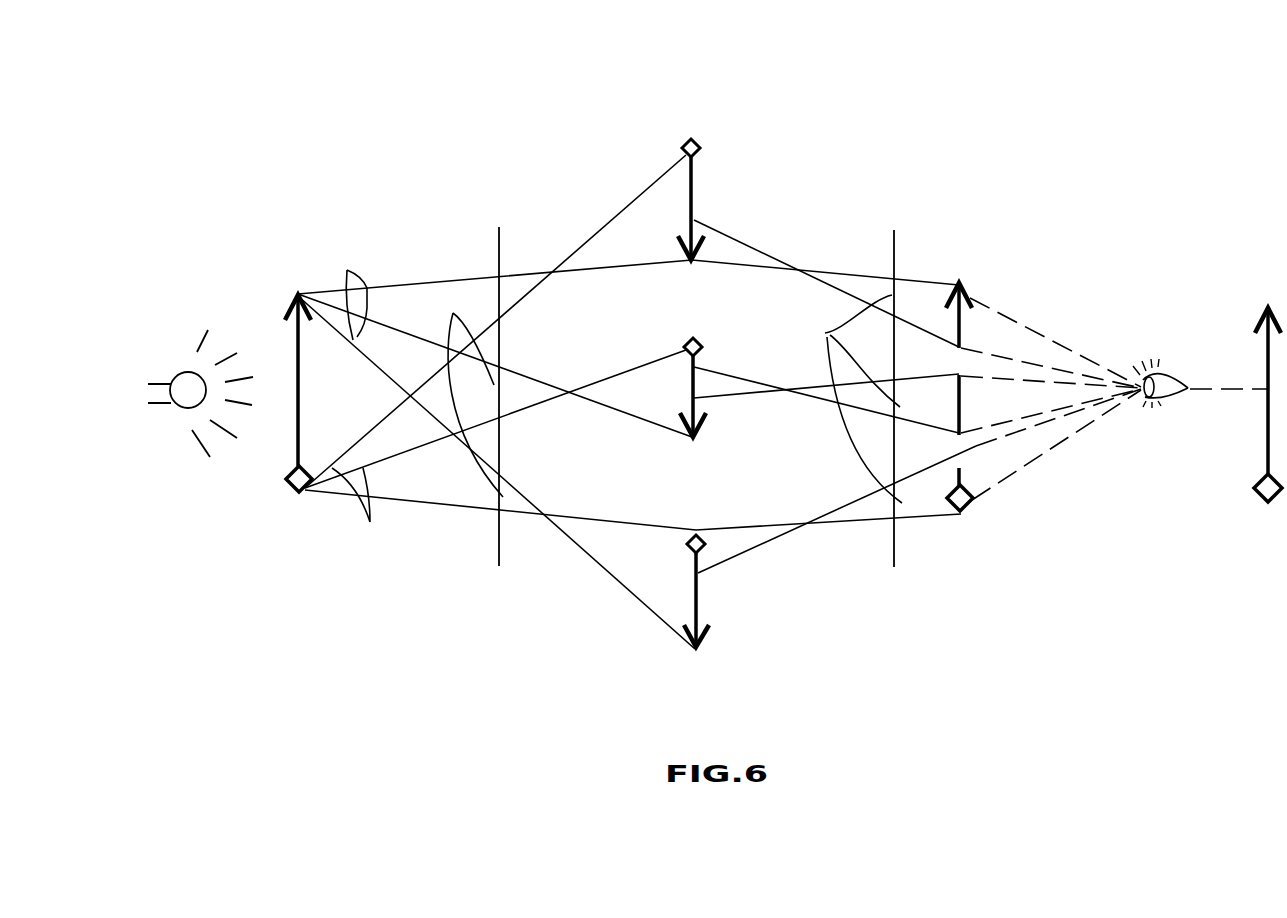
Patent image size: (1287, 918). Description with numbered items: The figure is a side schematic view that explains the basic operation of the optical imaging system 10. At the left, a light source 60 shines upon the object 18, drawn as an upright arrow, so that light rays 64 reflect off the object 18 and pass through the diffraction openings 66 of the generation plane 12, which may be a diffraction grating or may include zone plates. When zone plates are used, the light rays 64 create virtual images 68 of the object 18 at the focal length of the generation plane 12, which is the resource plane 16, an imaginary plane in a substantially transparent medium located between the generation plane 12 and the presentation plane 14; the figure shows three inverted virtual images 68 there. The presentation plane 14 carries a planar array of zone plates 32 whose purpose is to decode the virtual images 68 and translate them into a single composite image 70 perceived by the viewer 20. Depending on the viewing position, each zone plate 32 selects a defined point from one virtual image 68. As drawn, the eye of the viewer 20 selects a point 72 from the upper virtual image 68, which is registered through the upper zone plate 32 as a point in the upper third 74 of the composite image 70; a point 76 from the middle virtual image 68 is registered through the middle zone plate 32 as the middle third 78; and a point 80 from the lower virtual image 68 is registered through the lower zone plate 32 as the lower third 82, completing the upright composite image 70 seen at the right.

The optical imaging system 10 is at (568, 126).
The generation plane 12 is at (500, 550).
The presentation plane 14 is at (894, 556).
The resource plane 16 is at (668, 427).
The object 18 is at (298, 383).
The viewer 20 is at (1158, 406).
The zone plate 32 is at (826, 334).
The light source 60 is at (176, 417).
The light rays 64 is at (379, 528).
The diffraction openings 66 is at (498, 292).
The virtual images 68 is at (692, 190).
The composite image 70 is at (1266, 437).
The point 72 is at (665, 218).
The upper third of the composite image 74 is at (962, 332).
The point 76 is at (679, 355).
The middle third of the composite image 78 is at (962, 400).
The point 80 is at (672, 533).
The lower third of the composite image 82 is at (962, 470).